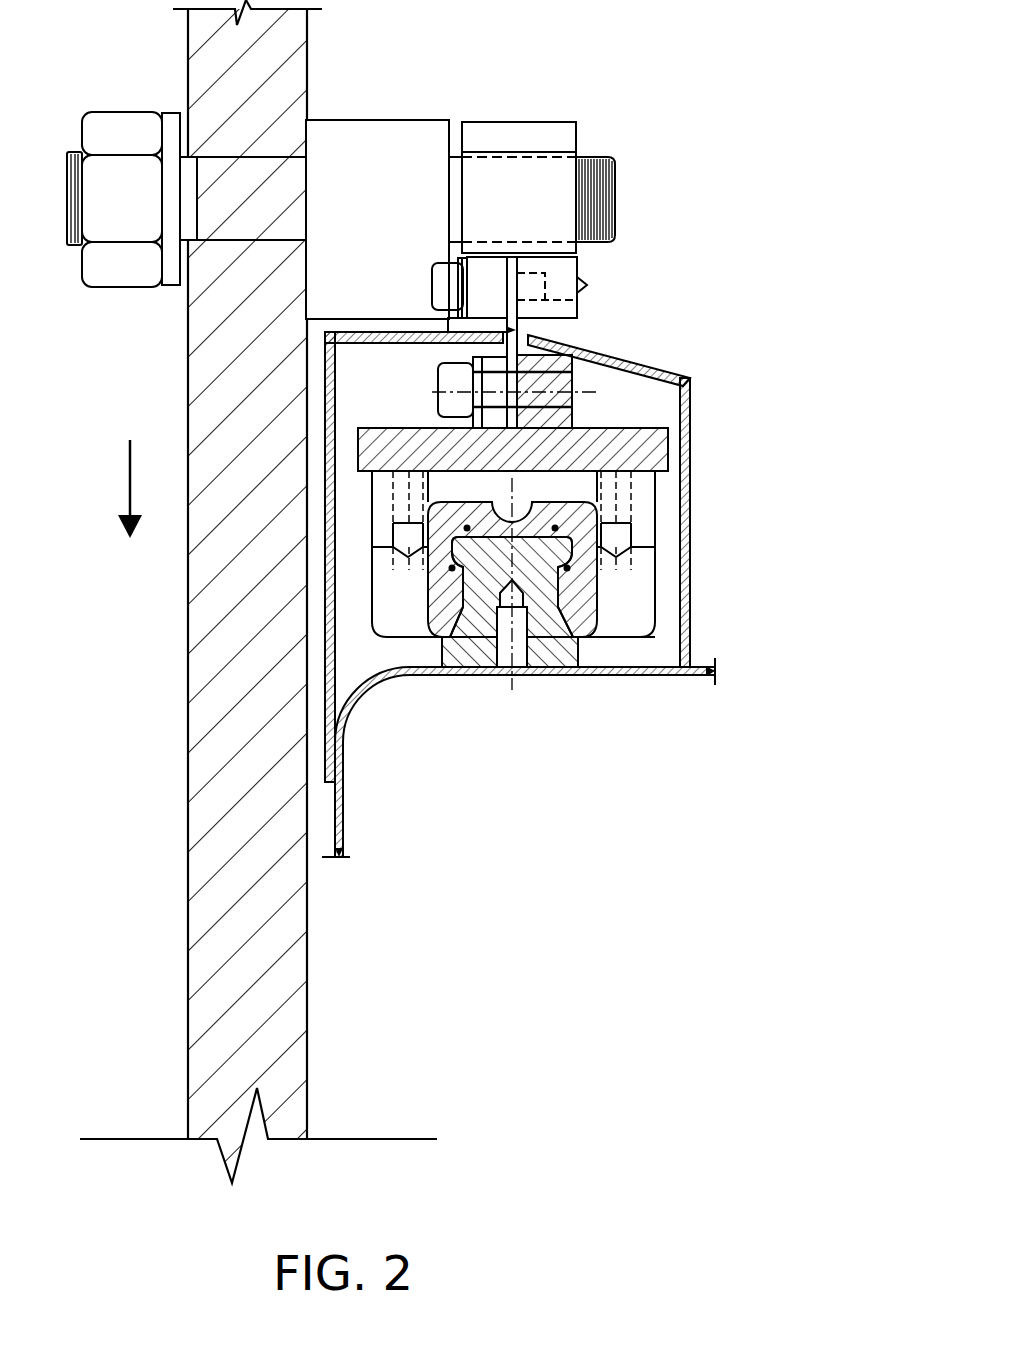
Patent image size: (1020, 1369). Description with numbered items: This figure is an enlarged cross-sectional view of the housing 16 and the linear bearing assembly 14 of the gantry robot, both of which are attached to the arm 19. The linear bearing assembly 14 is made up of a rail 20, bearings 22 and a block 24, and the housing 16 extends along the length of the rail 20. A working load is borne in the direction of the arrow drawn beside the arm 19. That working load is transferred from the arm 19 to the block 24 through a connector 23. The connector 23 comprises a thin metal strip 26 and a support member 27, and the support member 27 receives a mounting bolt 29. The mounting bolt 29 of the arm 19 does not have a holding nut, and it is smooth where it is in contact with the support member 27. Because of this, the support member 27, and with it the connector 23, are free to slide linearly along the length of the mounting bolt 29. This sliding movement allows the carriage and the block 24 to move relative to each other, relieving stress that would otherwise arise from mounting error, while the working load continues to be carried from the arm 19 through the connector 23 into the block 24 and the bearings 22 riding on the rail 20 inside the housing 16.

The linear bearing assembly 14 is at (573, 583).
The housing 16 is at (630, 357).
The arm 19 is at (185, 678).
The rail 20 is at (558, 657).
The bearings 22 is at (555, 529).
The connector 23 is at (575, 307).
The block 24 is at (633, 637).
The thin metal strip 26 is at (518, 268).
The support member 27 is at (577, 130).
The mounting bolt 29 is at (618, 180).